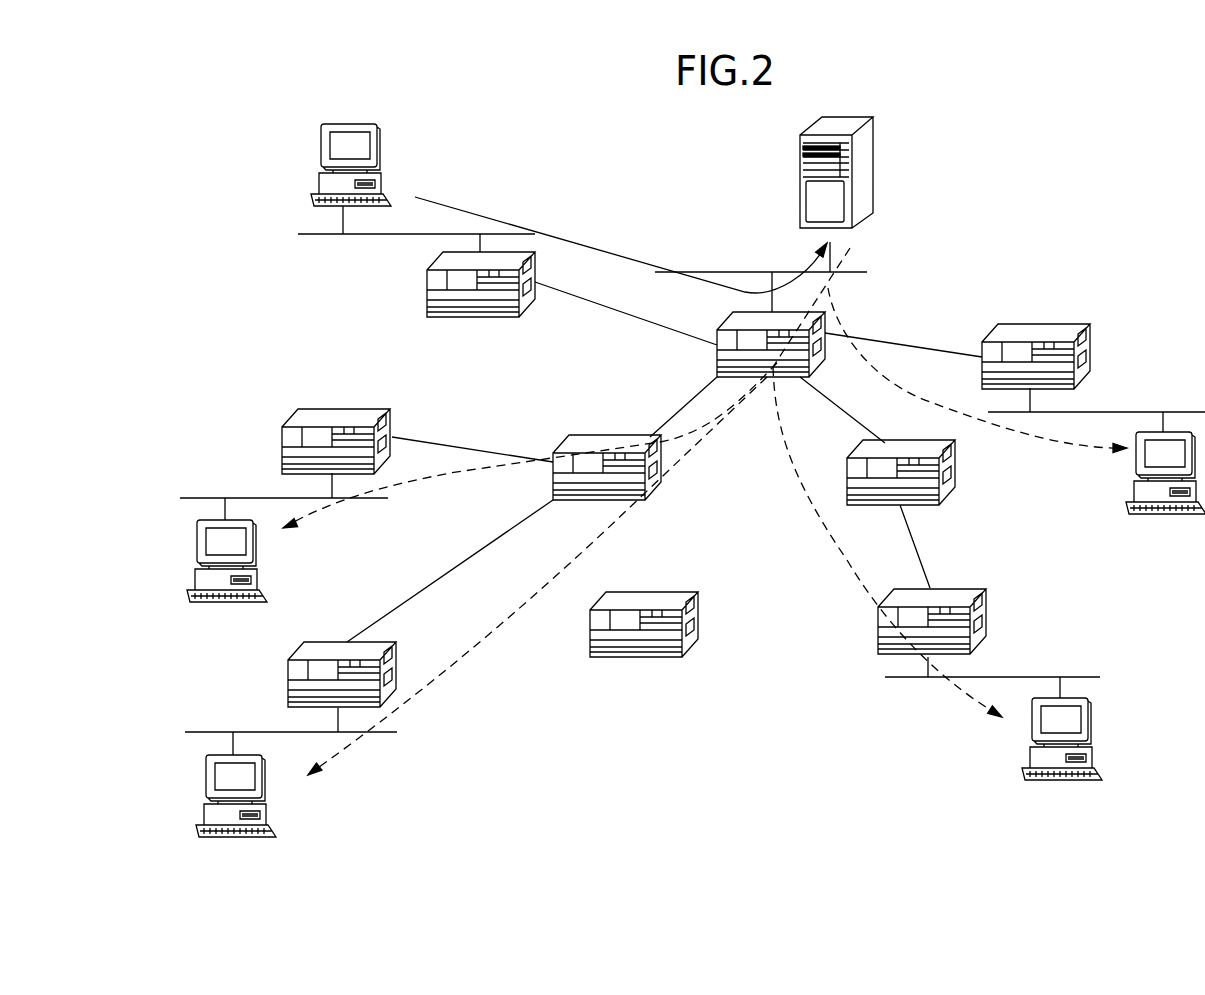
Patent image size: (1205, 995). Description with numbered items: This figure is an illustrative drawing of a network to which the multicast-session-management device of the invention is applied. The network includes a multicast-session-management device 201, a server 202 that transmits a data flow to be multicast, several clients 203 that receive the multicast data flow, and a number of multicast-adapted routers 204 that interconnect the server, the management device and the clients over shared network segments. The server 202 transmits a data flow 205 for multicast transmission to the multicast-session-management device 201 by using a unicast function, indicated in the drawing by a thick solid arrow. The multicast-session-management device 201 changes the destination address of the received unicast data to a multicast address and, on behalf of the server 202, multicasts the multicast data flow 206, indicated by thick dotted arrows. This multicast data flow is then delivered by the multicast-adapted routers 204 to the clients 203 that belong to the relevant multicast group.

The multicast-session-management device 201 is at (970, 166).
The server 202 is at (303, 165).
The clients 203 is at (696, 649).
The multicast-adapted routers 204 is at (660, 479).
The data flow for multicast transmission 205 is at (598, 246).
The multicast data flow 206 is at (487, 657).